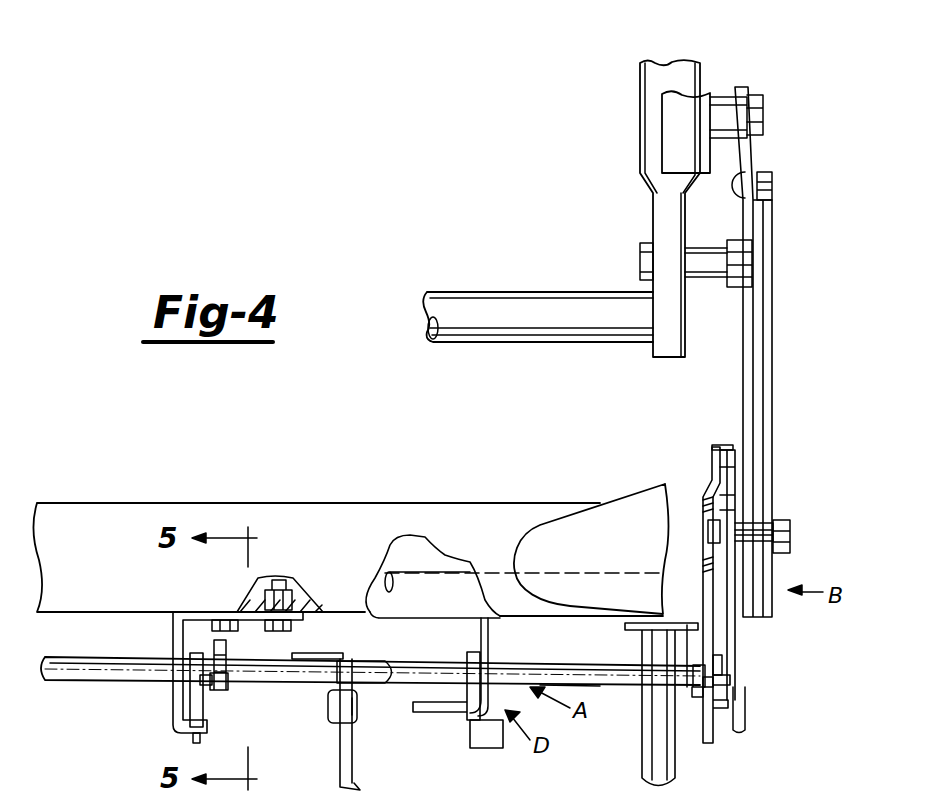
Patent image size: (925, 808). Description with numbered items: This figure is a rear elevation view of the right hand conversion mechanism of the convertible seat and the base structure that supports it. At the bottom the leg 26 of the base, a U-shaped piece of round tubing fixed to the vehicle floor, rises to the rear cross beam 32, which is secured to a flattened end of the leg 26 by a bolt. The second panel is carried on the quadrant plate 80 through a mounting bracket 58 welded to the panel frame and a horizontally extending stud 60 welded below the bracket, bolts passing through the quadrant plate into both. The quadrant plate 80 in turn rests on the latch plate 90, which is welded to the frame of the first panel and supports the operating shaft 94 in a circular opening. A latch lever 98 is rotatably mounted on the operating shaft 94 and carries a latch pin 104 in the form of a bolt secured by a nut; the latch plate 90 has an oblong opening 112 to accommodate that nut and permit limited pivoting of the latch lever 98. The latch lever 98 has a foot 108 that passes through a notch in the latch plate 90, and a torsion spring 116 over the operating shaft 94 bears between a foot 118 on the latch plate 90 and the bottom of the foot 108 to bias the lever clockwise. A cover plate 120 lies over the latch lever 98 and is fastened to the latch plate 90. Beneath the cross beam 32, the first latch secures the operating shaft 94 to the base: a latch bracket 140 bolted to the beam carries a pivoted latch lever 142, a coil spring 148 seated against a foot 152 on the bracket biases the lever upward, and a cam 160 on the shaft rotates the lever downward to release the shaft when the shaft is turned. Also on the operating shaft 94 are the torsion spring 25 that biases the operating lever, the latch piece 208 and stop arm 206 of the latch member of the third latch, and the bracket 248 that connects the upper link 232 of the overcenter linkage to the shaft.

The mounting bracket 58 is at (700, 102).
The stud 60 is at (733, 230).
The quadrant plate 80 is at (767, 333).
The rear cross beam 32 is at (308, 512).
The oblong opening 112 is at (703, 517).
The latch pin 104 is at (775, 518).
The latch bracket 140 is at (173, 633).
The foot 152 is at (187, 735).
The latch lever 142 is at (203, 697).
The coil spring 148 is at (197, 700).
The cam 160 is at (226, 645).
The torsion spring 25 is at (487, 644).
The bracket 248 is at (336, 650).
The upper link 232 is at (352, 783).
The stop arm 206 is at (433, 713).
The latch piece 208 is at (487, 749).
The operating shaft 94 is at (545, 686).
The leg 26 is at (673, 767).
The latch plate 90 is at (648, 727).
The foot 108 is at (703, 672).
The latch lever 98 is at (730, 620).
The torsion spring 116 is at (722, 662).
The foot 118 is at (723, 727).
The cover plate 120 is at (745, 718).